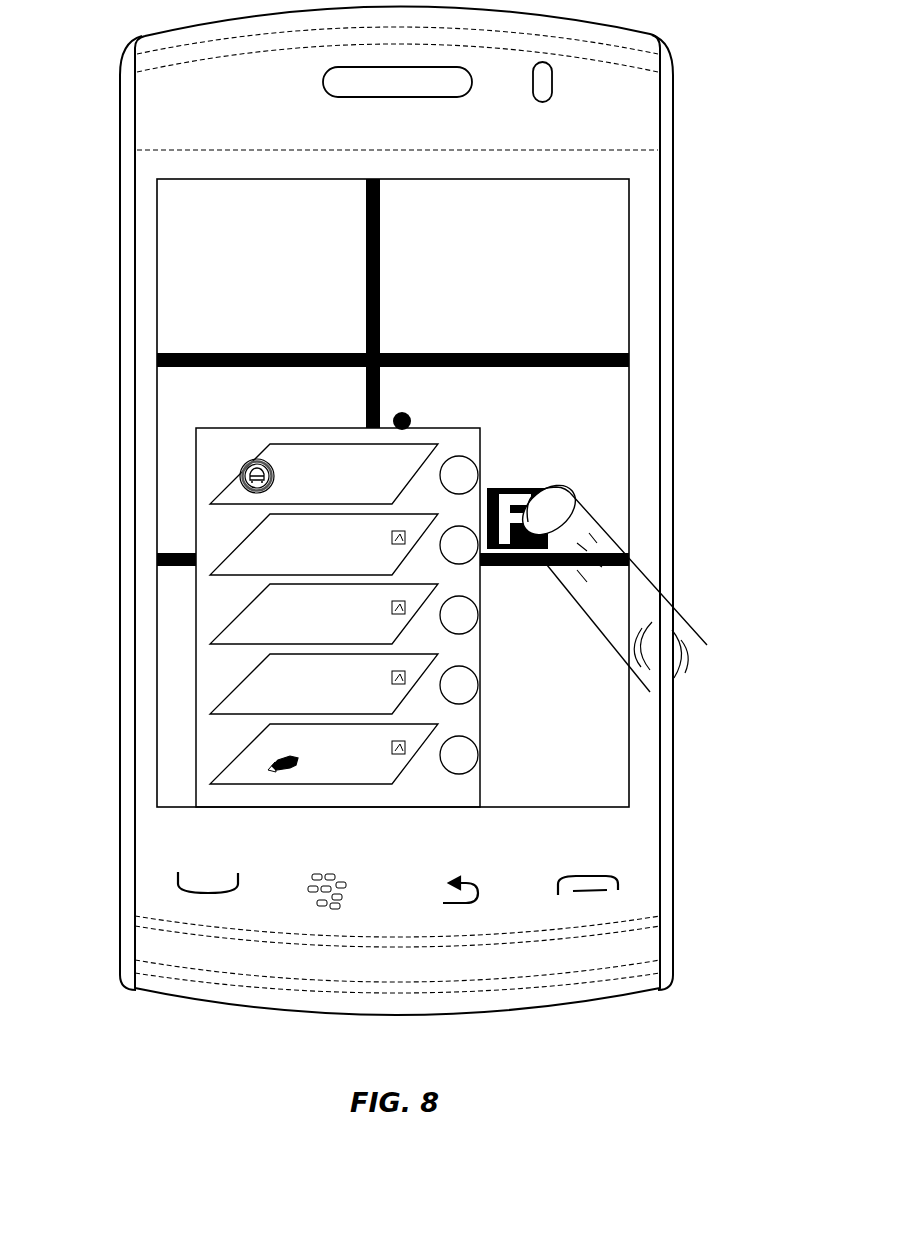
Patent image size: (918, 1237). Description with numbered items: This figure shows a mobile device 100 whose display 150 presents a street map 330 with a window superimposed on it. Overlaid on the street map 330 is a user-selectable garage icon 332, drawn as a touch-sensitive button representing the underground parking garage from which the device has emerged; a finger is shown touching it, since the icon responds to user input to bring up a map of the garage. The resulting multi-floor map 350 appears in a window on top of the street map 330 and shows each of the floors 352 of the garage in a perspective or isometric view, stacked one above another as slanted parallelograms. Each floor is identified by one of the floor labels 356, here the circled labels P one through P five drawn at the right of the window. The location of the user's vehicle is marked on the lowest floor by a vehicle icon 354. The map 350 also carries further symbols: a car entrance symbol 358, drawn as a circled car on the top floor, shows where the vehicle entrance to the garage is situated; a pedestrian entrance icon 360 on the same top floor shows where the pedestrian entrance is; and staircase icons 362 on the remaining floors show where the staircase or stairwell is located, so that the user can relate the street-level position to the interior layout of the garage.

The mobile device 100 is at (711, 96).
The display screen 150 is at (630, 282).
The street map 330 is at (282, 295).
The garage icon 332 is at (510, 488).
The multi-floor map 350 is at (196, 452).
The floors 352 is at (240, 541).
The vehicle icon 354 is at (272, 770).
The floor labels 356 is at (480, 754).
The car entrance symbol 358 is at (240, 476).
The pedestrian entrance icon 360 is at (402, 472).
The staircase icons 362 is at (383, 680).